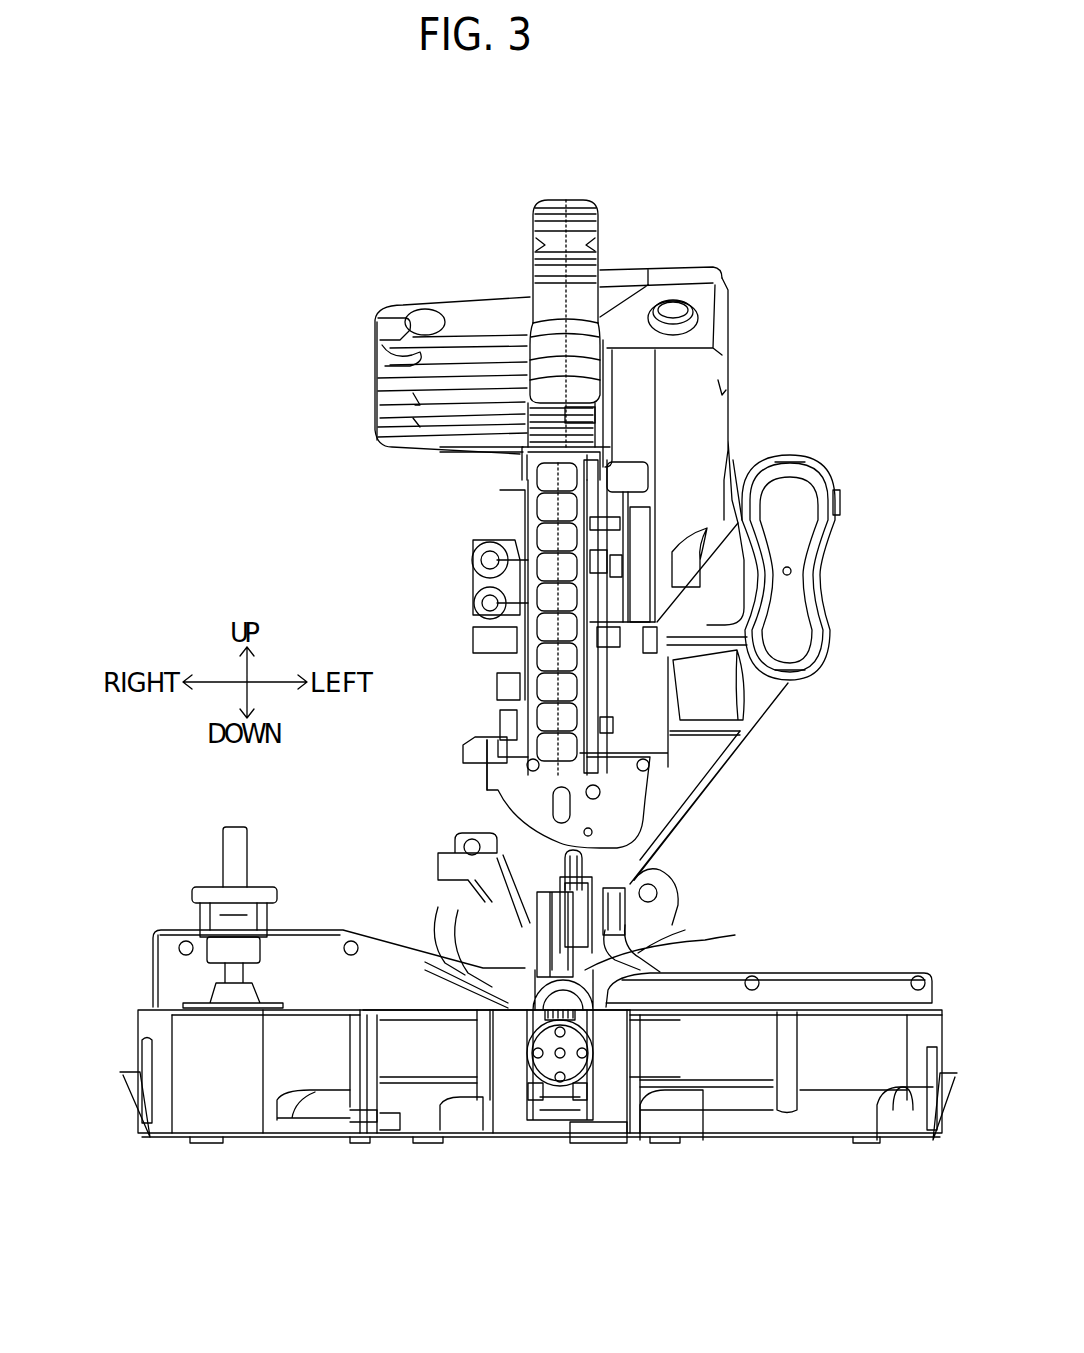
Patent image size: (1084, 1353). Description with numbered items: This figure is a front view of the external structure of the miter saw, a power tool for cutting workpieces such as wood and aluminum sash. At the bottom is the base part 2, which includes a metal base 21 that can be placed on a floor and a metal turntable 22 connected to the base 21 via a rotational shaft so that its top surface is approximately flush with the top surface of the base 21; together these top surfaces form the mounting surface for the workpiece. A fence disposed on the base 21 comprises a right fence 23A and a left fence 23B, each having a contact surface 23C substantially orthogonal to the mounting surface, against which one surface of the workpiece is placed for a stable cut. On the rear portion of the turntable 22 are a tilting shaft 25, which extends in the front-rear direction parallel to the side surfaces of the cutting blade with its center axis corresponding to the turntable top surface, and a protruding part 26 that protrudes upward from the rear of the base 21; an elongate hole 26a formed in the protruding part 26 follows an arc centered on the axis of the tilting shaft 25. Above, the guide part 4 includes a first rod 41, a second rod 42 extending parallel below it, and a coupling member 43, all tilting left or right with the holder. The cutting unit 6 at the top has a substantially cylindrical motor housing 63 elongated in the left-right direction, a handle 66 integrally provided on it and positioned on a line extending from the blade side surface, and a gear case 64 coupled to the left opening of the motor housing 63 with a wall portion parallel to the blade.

The base part 2 is at (509, 1117).
The guide part 4 is at (871, 515).
The cutting unit 6 is at (765, 355).
The base 21 is at (208, 1097).
The turntable 22 is at (433, 1047).
The right fence 23A is at (323, 943).
The left fence 23B is at (878, 990).
The contact surface 23C is at (797, 985).
The tilting shaft 25 is at (663, 955).
The protruding part 26 is at (455, 905).
The elongate hole 26a is at (677, 885).
The first rod 41 is at (787, 460).
The second rod 42 is at (792, 645).
The coupling member 43 is at (833, 582).
The motor housing 63 is at (390, 315).
The gear case 64 is at (693, 282).
The handle 66 is at (575, 203).